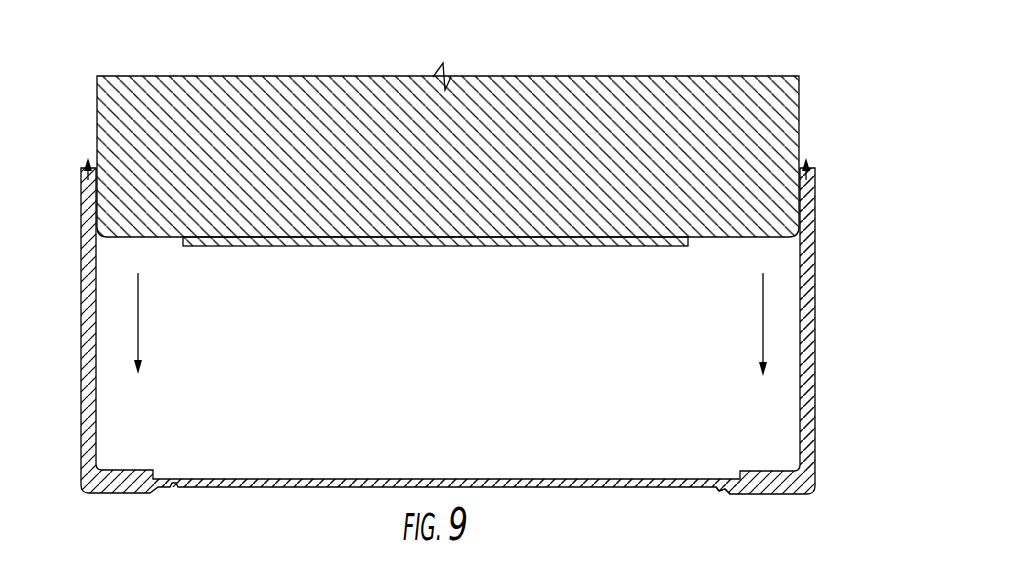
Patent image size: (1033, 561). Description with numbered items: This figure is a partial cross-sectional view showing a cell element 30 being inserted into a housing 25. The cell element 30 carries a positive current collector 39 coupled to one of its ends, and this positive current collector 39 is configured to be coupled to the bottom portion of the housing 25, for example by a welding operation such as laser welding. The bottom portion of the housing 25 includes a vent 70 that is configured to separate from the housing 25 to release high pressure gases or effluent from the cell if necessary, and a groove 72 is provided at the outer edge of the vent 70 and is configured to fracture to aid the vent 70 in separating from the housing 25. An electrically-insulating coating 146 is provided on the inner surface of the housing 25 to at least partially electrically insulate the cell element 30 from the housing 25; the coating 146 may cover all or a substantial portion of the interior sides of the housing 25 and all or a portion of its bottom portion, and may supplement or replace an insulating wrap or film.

The housing 25 is at (80, 350).
The cell element 30 is at (632, 93).
The positive current collector 39 is at (543, 245).
The vent 70 is at (635, 487).
The groove 72 is at (717, 487).
The electrically-insulating coating 146 is at (803, 346).